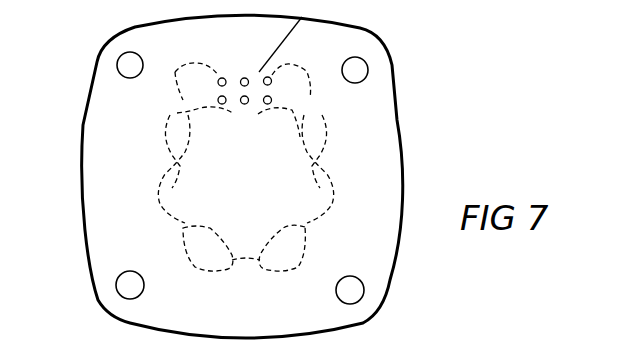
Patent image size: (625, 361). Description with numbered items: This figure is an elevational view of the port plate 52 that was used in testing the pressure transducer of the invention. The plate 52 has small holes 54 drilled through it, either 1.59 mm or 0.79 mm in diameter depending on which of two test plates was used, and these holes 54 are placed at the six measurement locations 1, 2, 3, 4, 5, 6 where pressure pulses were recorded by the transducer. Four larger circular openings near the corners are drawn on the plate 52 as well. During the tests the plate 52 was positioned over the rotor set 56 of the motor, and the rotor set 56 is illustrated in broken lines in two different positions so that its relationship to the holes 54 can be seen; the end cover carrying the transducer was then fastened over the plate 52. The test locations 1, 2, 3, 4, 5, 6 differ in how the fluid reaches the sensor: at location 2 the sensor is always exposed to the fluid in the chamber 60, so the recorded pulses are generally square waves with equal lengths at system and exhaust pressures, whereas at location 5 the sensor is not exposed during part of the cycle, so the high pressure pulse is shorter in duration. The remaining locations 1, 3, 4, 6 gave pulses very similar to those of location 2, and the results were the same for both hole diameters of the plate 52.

The location 1 is at (218, 82).
The location 2 is at (242, 79).
The location 3 is at (273, 83).
The location 4 is at (218, 100).
The location 5 is at (246, 104).
The location 6 is at (272, 98).
The plate 52 is at (100, 212).
The holes 54 is at (242, 94).
The rotor set 56 is at (333, 162).
The chamber 60 is at (295, 38).